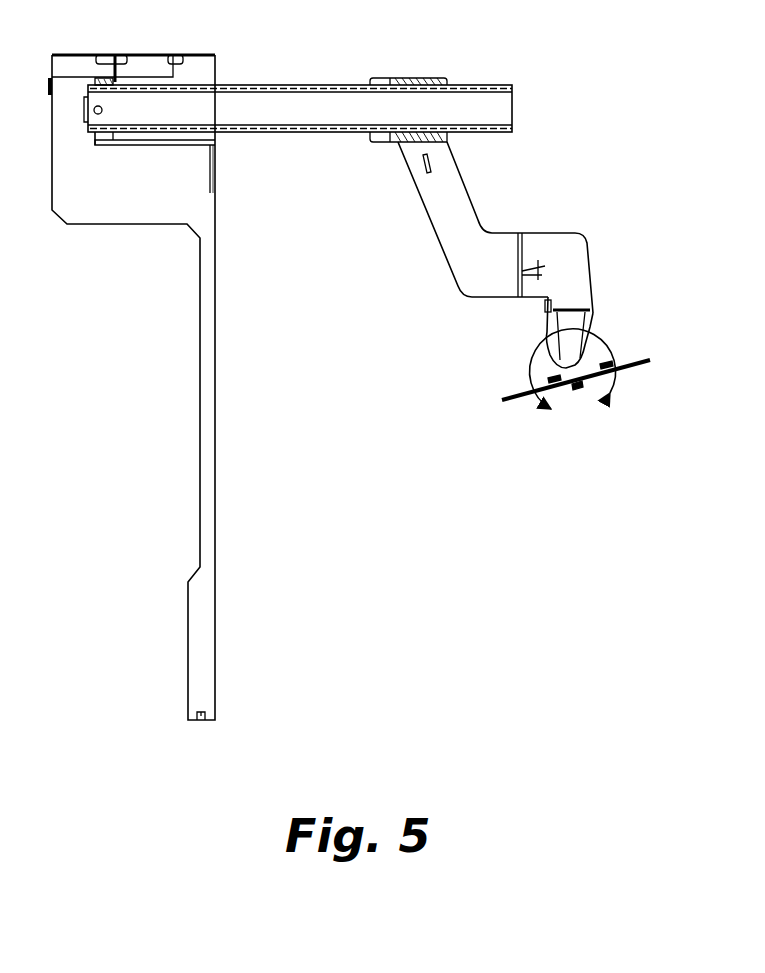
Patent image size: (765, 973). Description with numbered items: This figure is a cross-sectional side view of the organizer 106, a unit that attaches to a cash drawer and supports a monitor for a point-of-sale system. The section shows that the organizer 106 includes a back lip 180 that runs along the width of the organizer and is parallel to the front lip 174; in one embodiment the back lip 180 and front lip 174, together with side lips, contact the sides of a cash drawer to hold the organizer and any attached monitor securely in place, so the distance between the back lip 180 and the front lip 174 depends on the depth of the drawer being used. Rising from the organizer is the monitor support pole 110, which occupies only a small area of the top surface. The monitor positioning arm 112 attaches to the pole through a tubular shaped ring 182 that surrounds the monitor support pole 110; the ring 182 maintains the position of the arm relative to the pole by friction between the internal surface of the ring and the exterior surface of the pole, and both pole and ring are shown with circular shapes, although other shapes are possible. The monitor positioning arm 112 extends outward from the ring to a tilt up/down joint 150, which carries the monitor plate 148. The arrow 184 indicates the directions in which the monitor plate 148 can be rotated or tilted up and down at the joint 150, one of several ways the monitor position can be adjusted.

The organizer 106 is at (356, 503).
The monitor support pole 110 is at (273, 103).
The monitor positioning arm 112 is at (476, 183).
The monitor plate 148 is at (632, 370).
The tilt up/down joint 150 is at (593, 315).
The front lip 174 is at (203, 720).
The back lip 180 is at (165, 145).
The tubular shaped ring 182 is at (412, 78).
The arrow 184 is at (532, 357).